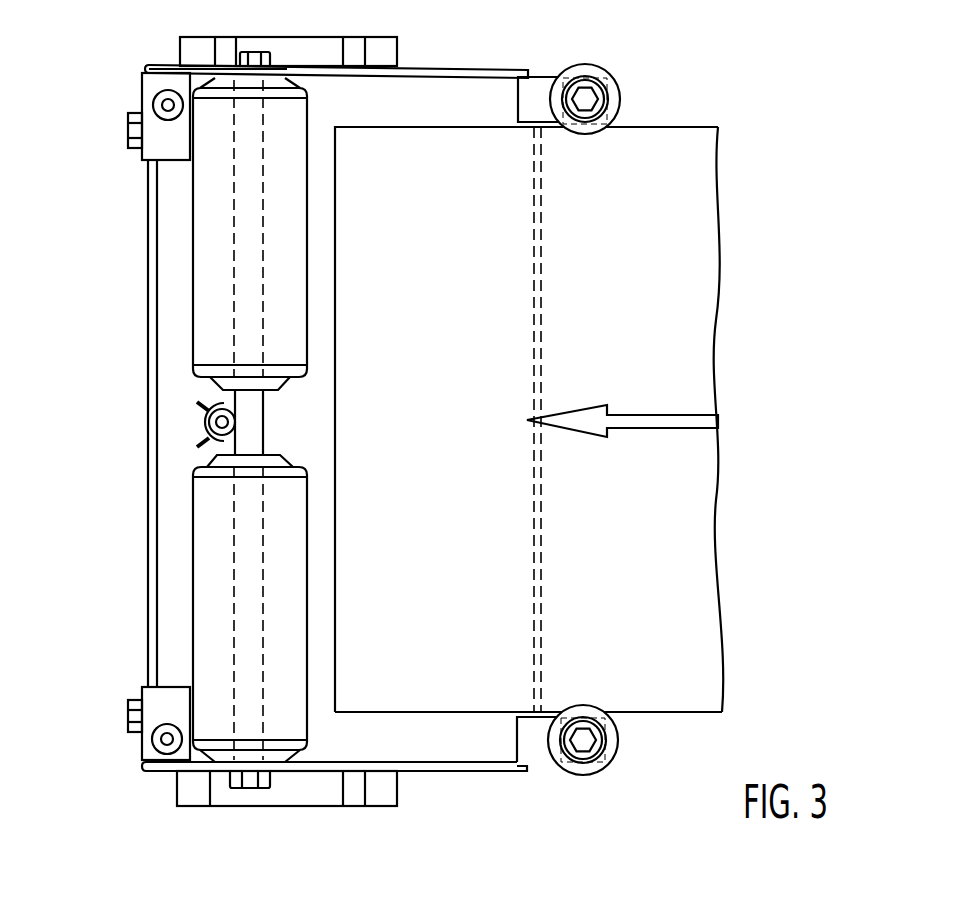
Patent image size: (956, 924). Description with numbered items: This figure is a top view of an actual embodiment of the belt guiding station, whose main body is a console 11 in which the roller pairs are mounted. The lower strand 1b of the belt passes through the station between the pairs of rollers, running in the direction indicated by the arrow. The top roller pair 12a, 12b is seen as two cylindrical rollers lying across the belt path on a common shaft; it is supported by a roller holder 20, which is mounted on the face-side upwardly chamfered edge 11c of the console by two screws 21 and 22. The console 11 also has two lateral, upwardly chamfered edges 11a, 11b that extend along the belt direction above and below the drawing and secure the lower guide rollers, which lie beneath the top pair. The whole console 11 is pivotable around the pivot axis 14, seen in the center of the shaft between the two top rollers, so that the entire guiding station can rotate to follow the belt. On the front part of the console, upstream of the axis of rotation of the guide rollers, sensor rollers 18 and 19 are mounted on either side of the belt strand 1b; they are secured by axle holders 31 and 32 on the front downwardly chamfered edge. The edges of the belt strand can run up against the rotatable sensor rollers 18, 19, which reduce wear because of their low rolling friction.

The lower strand 1b is at (695, 282).
The console 11 is at (445, 92).
The lateral upwardly chamfered edge 11a is at (510, 70).
The lateral upwardly chamfered edge 11b is at (455, 773).
The face side upwardly chamfered edge 11c is at (148, 327).
The top roller 12a is at (193, 543).
The top roller 12b is at (193, 223).
The pivot axis 14 is at (200, 430).
The sensor roller 18 is at (622, 97).
The sensor roller 19 is at (620, 745).
The roller holder 20 is at (147, 67).
The screw 21 is at (128, 133).
The screw 22 is at (128, 718).
The axle holder 31 is at (548, 78).
The axle holder 32 is at (543, 765).